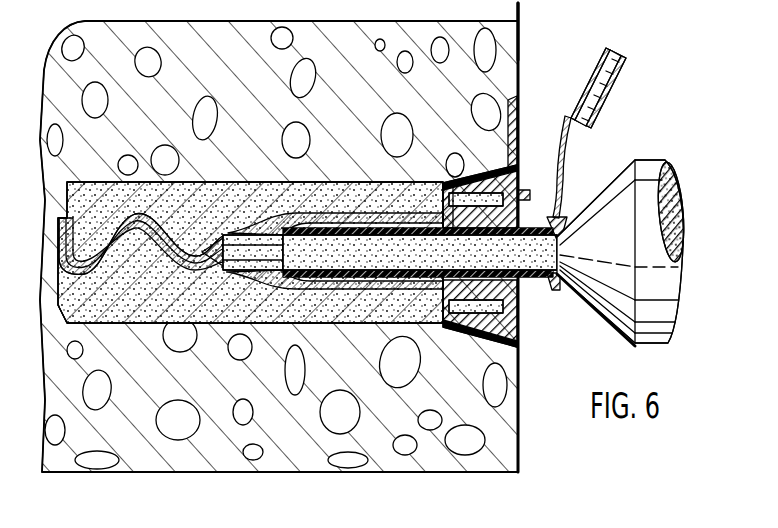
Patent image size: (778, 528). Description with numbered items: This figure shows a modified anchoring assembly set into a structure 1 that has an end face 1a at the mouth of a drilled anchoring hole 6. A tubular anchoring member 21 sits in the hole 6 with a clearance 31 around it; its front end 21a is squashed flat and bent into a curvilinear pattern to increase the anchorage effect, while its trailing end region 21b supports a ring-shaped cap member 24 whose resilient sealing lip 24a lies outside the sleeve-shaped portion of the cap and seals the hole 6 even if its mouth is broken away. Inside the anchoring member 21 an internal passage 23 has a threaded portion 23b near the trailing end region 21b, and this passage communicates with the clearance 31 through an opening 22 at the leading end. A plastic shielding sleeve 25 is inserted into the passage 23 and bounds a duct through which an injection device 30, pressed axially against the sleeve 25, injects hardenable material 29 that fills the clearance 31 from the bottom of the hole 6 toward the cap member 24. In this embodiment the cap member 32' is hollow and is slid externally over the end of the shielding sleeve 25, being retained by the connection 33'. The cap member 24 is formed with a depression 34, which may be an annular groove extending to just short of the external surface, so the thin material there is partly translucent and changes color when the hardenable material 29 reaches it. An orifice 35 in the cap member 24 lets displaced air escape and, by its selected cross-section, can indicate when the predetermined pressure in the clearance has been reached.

The structure 1 is at (62, 455).
The end face of concrete body 1a is at (520, 25).
The hole 6 is at (157, 293).
The anchoring member 21 is at (286, 208).
The front end 21a is at (138, 214).
The trailing end region 21b is at (455, 182).
The opening 22 is at (240, 233).
The internal passage 23 is at (425, 330).
The threaded portion 23b is at (518, 274).
The cap member 24 is at (522, 183).
The sealing lip 24a is at (518, 114).
The shielding sleeve 25 is at (360, 272).
The hardenable material 29 is at (411, 228).
The injection device 30 is at (643, 187).
The clearance 31 is at (357, 212).
The cap member 32' is at (623, 76).
The clamping wire 33' is at (579, 167).
The depression 34 is at (519, 331).
The orifice 35 is at (519, 194).